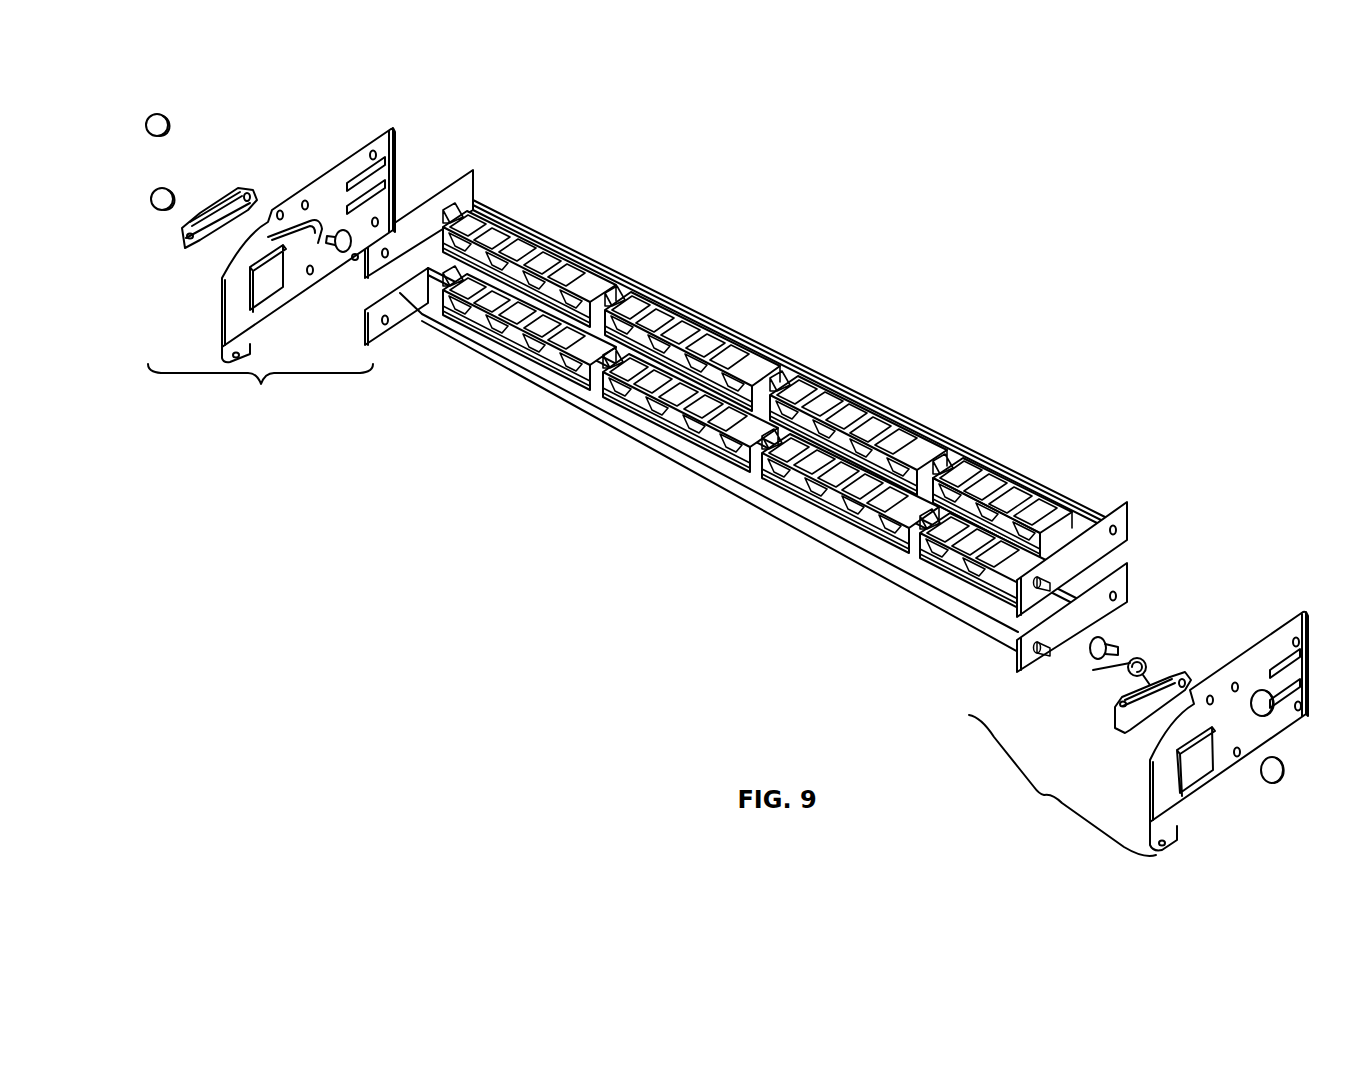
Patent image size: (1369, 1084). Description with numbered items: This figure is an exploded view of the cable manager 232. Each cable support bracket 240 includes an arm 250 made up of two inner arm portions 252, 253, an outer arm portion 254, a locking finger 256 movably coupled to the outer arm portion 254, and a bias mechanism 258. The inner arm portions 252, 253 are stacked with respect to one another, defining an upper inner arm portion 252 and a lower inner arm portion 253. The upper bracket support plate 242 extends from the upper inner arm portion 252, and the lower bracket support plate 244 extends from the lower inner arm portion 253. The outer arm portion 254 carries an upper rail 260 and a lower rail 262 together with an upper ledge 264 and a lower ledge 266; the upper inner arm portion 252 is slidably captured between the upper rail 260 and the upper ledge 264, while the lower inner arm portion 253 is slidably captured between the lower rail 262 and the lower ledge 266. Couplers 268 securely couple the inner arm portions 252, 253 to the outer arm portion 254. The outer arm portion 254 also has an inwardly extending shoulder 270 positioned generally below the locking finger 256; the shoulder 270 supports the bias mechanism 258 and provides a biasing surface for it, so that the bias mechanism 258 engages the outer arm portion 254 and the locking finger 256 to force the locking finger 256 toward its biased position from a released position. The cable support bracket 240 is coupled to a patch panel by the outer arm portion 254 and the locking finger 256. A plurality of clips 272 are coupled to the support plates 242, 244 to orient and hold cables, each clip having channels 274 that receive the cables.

The cable manager 232 is at (905, 294).
The cable support bracket 240 is at (210, 270).
The upper bracket support plate 242 is at (771, 361).
The lower bracket support plate 244 is at (742, 470).
The arm 250 is at (736, 470).
The upper inner arm portion 252 is at (462, 192).
The lower inner arm portion 253 is at (383, 324).
The outer arm portion 254 is at (327, 188).
The locking finger 256 is at (226, 198).
The bias mechanism 258 is at (305, 250).
The upper rail 260 is at (393, 130).
The lower rail 262 is at (353, 260).
The upper ledge 264 is at (370, 178).
The lower ledge 266 is at (388, 188).
The couplers 268 is at (168, 112).
The shoulder 270 is at (216, 289).
The clips 272 is at (962, 462).
The channels 274 is at (1003, 525).